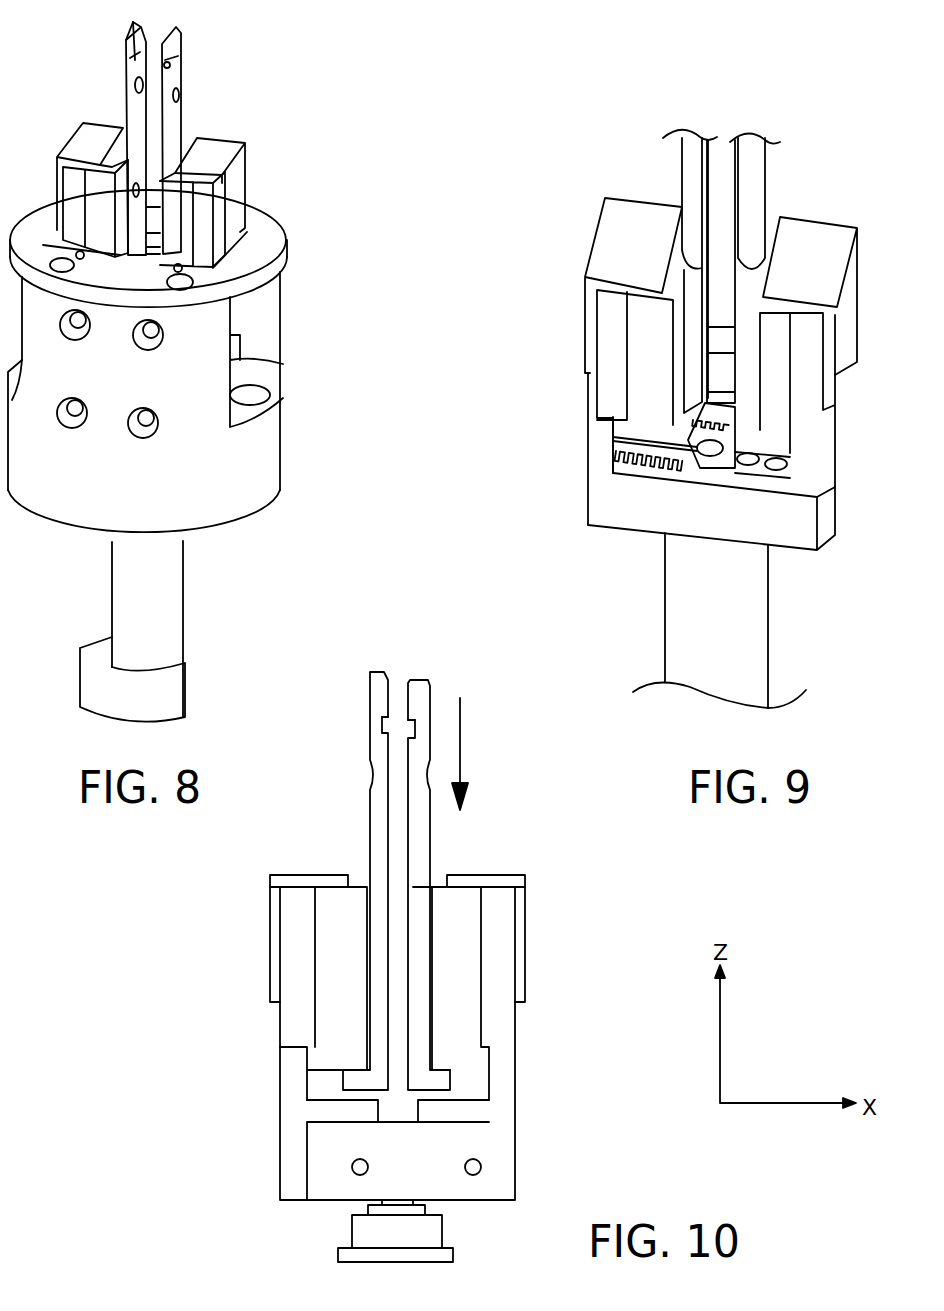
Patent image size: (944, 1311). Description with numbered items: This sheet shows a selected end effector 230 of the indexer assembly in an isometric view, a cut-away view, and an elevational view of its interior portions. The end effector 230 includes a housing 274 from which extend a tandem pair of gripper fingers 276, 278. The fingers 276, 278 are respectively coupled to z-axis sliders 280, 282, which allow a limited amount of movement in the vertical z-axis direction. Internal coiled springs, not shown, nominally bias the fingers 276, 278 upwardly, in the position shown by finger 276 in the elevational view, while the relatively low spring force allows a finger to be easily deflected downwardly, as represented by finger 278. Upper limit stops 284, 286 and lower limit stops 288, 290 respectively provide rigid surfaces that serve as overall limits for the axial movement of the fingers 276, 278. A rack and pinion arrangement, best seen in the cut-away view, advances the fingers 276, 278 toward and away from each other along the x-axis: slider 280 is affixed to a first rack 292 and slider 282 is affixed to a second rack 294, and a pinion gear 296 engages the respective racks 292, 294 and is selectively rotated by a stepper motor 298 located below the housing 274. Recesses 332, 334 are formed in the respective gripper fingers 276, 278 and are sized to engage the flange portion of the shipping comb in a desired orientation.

In FIG. 8, the end effector 230 is at (342, 132).
In FIG. 9, the end effector 230 is at (520, 207).
In FIG. 10, the end effector 230 is at (140, 1001).
In FIG. 8, the housing 274 is at (255, 462).
In FIG. 8, the gripper finger 276 is at (135, 25).
In FIG. 9, the gripper finger 276 is at (693, 133).
In FIG. 10, the gripper finger 276 is at (382, 670).
In FIG. 8, the gripper finger 278 is at (178, 30).
In FIG. 9, the gripper finger 278 is at (753, 137).
In FIG. 10, the gripper finger 278 is at (418, 678).
In FIG. 8, the z-axis slider 280 is at (98, 203).
In FIG. 9, the z-axis slider 280 is at (650, 364).
In FIG. 10, the z-axis slider 280 is at (340, 982).
In FIG. 8, the z-axis slider 282 is at (178, 212).
In FIG. 9, the z-axis slider 282 is at (772, 384).
In FIG. 10, the z-axis slider 282 is at (460, 982).
In FIG. 8, the upper limit stop 284 is at (99, 140).
In FIG. 9, the upper limit stop 284 is at (642, 228).
In FIG. 10, the upper limit stop 284 is at (323, 875).
In FIG. 8, the upper limit stop 286 is at (212, 148).
In FIG. 9, the upper limit stop 286 is at (806, 245).
In FIG. 10, the upper limit stop 286 is at (485, 875).
In FIG. 9, the lower limit stop 288 is at (620, 440).
In FIG. 10, the lower limit stop 288 is at (330, 1110).
In FIG. 9, the lower limit stop 290 is at (758, 484).
In FIG. 10, the lower limit stop 290 is at (460, 1110).
In FIG. 9, the first rack 292 is at (737, 418).
In FIG. 9, the second rack 294 is at (642, 466).
In FIG. 9, the pinion gear 296 is at (700, 456).
In FIG. 8, the stepper motor 298 is at (160, 688).
In FIG. 8, the recess 332 is at (140, 62).
In FIG. 10, the recess 332 is at (387, 718).
In FIG. 8, the recess 334 is at (170, 68).
In FIG. 10, the recess 334 is at (416, 728).